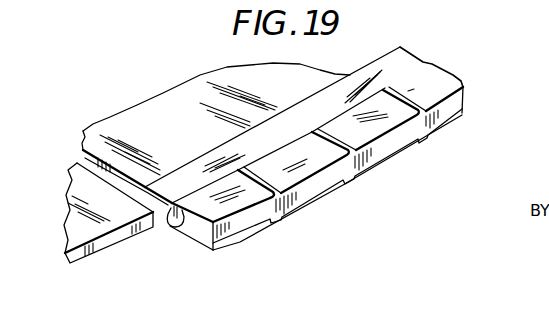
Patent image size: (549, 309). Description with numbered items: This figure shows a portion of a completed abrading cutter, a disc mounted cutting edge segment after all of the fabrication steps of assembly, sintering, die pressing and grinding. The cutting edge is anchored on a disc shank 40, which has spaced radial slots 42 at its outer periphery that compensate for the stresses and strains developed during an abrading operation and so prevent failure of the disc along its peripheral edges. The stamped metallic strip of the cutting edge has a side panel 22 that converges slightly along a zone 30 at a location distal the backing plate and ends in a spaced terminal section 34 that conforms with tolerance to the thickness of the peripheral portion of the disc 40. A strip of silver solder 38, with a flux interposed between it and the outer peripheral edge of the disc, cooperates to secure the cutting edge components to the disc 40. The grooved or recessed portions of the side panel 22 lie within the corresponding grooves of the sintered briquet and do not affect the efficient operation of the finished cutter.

The side panel 22 is at (190, 238).
The converging zone 30 is at (173, 207).
The terminal section 34 is at (147, 185).
The strip of silver solder 38 is at (180, 223).
The disc shank 40 is at (135, 110).
The radial slot 42 is at (108, 177).